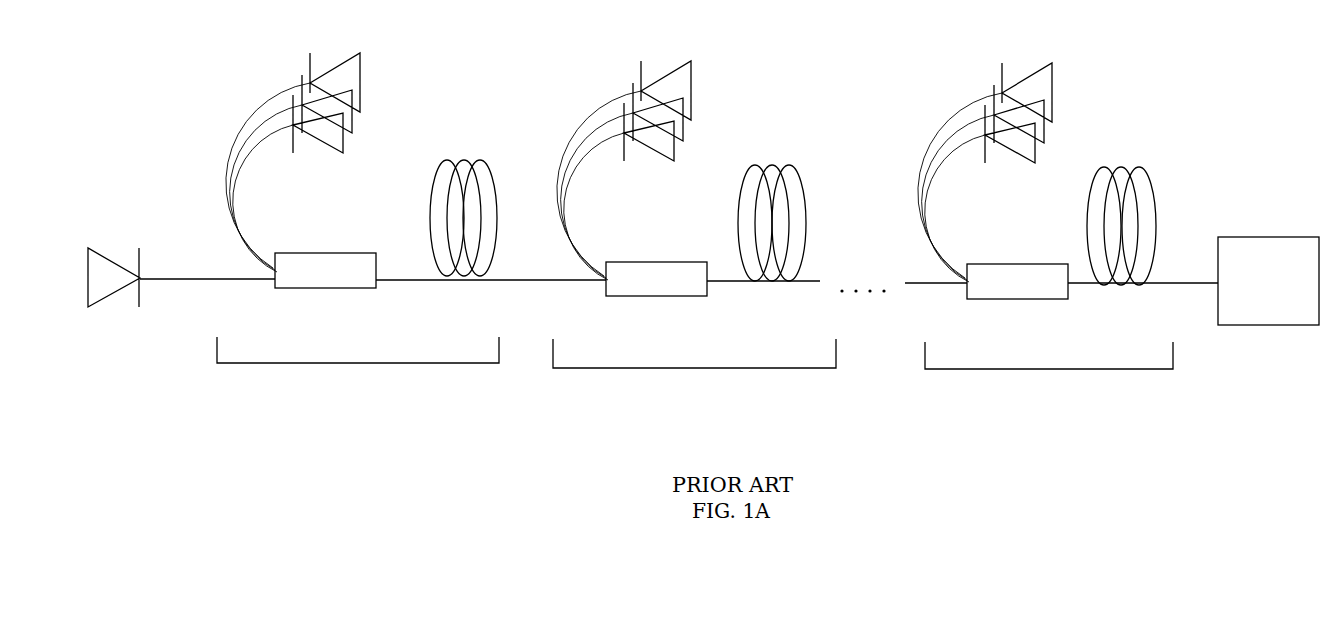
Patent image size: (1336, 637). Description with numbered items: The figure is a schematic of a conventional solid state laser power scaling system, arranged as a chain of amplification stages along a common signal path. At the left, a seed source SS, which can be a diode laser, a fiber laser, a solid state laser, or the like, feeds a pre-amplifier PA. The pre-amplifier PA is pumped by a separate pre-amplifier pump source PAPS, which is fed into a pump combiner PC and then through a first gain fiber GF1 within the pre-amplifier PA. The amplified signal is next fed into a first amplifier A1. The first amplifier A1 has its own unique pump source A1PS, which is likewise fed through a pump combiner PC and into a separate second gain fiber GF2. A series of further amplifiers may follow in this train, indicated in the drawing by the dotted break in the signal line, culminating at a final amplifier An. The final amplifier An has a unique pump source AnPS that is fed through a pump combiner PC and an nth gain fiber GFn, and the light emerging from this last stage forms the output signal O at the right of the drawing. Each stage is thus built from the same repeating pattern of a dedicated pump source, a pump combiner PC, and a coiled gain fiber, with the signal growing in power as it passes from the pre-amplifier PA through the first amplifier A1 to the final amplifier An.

The seed source SS is at (114, 277).
The pre-amplifier pump source PAPS is at (323, 149).
The first amplifier pump source A1PS is at (646, 153).
The final amplifier pump source AnPS is at (1009, 155).
The pump combiner PC is at (671, 276).
The first gain fiber GF1 is at (464, 160).
The second gain fiber GF2 is at (772, 165).
The nth gain fiber GFn is at (1122, 167).
The output signal O is at (1268, 281).
The pre-amplifier PA is at (358, 377).
The first amplifier A1 is at (694, 381).
The final amplifier An is at (1049, 383).